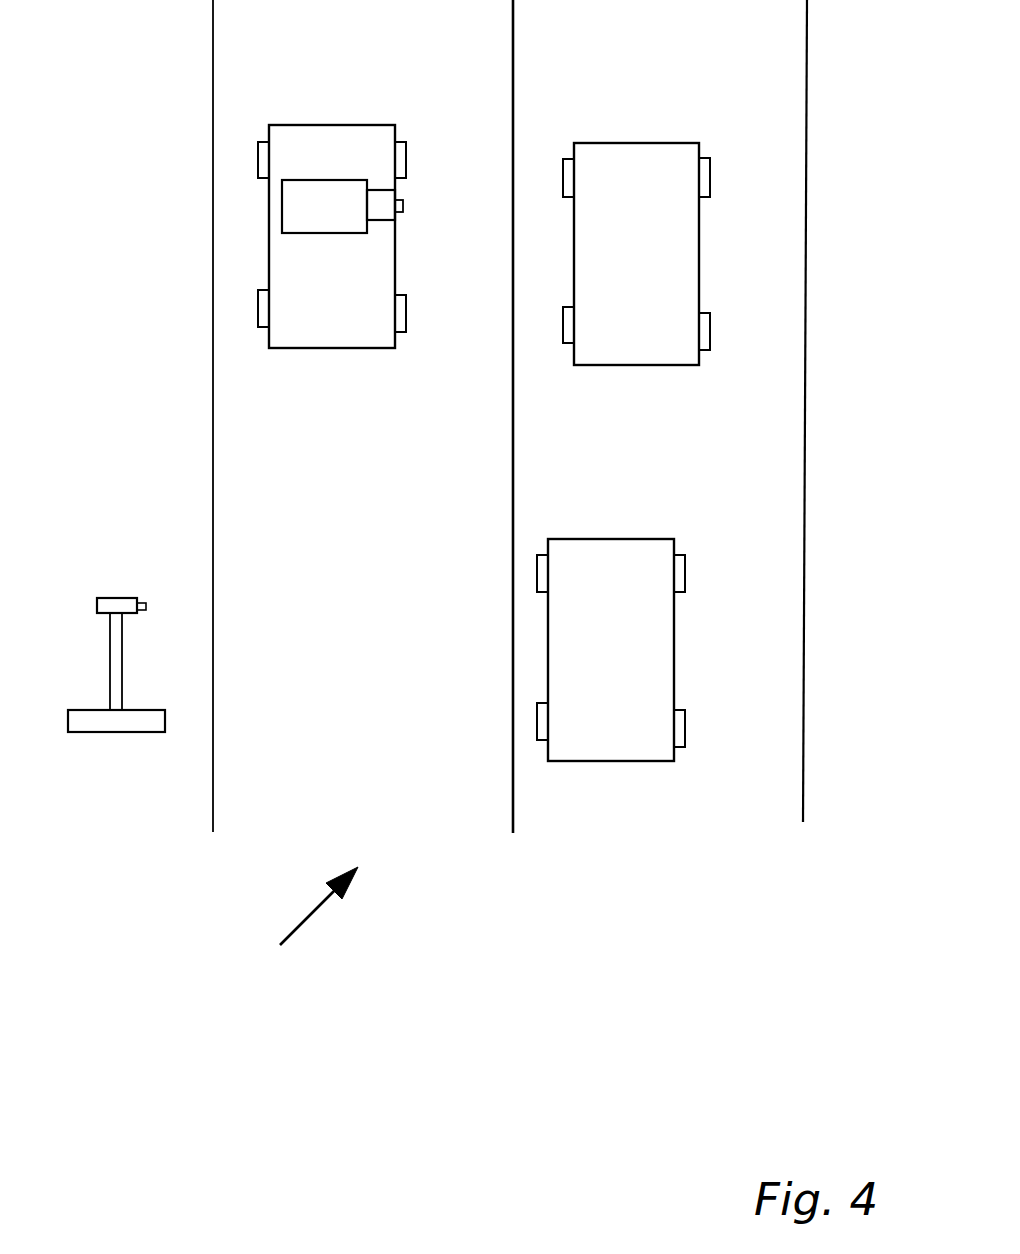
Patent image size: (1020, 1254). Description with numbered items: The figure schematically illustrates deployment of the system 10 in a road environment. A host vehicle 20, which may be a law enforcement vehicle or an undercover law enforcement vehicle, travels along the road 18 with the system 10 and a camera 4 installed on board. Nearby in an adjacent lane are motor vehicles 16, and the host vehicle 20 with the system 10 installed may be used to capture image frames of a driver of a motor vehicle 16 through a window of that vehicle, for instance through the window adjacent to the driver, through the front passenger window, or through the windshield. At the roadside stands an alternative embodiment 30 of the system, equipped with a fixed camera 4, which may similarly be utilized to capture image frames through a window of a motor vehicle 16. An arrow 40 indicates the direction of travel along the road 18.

The camera 4 is at (385, 206).
The system 10 is at (324, 206).
The motor vehicle 16 is at (701, 212).
The road / lane 18 is at (510, 416).
The host vehicle 20 is at (327, 350).
The alternative embodiment of system 30 is at (90, 732).
The direction of travel 40 is at (298, 927).